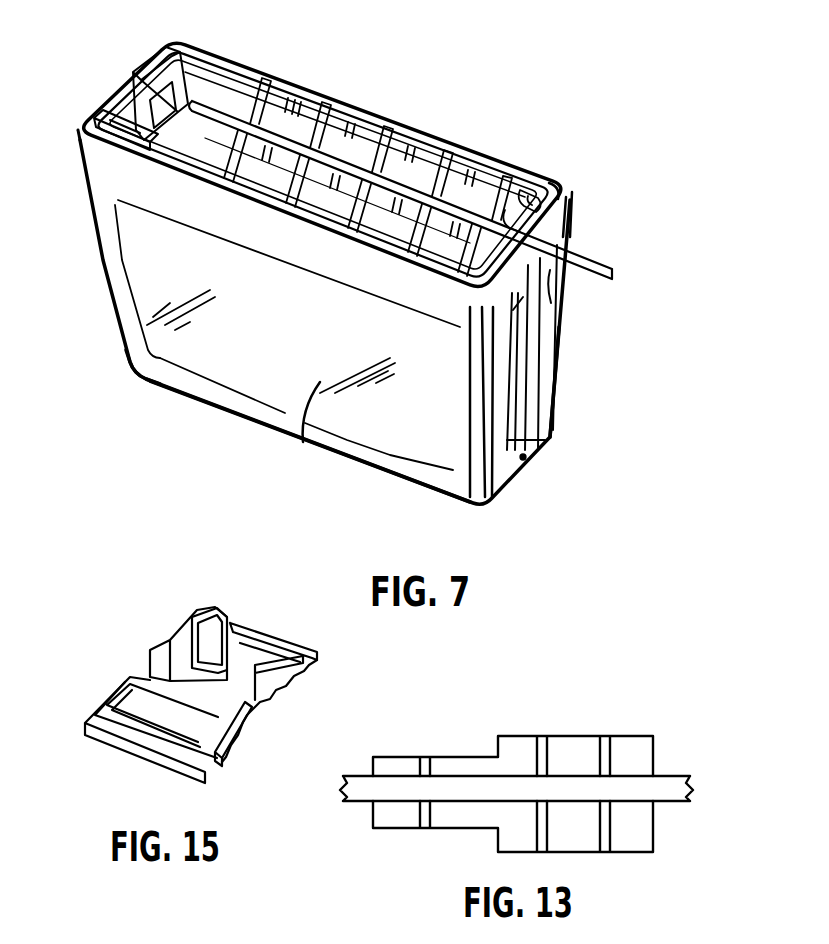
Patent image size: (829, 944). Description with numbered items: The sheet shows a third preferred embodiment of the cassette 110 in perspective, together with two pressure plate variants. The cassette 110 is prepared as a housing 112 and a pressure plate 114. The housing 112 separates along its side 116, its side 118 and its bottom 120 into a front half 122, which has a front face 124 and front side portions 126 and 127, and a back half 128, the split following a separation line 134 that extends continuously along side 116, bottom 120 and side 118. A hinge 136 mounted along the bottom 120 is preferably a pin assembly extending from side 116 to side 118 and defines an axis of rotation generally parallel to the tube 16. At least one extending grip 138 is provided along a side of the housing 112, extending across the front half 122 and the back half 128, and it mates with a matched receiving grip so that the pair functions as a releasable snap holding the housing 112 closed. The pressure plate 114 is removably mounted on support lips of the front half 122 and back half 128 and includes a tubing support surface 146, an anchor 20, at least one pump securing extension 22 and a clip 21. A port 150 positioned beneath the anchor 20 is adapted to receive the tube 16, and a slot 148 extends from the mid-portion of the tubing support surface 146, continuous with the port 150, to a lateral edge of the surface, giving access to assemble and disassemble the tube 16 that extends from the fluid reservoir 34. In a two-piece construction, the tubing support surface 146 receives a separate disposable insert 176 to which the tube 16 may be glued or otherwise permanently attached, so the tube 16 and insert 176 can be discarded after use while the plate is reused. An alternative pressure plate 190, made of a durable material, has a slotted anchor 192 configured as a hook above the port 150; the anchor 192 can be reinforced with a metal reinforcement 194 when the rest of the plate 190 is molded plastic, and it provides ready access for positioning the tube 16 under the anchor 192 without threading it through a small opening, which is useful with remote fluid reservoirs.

In FIG. 7, the cassette 110 is at (592, 376).
In FIG. 7, the housing 112 is at (107, 230).
In FIG. 7, the pressure plate 114 is at (440, 147).
In FIG. 7, the side 116 is at (78, 140).
In FIG. 7, the side 118 is at (502, 387).
In FIG. 7, the bottom 120 is at (262, 423).
In FIG. 7, the front half 122 is at (145, 380).
In FIG. 7, the front face 124 is at (303, 443).
In FIG. 7, the front side portion 126 is at (100, 182).
In FIG. 7, the front side portion 127 is at (502, 432).
In FIG. 7, the back half 128 is at (578, 224).
In FIG. 7, the separation line 134 is at (528, 338).
In FIG. 7, the hinge 136 is at (525, 458).
In FIG. 7, the extending grip 138 is at (548, 306).
In FIG. 7, the tubing support surface 146 is at (358, 140).
In FIG. 7, the slot 148 is at (122, 100).
In FIG. 7, the port 150 is at (132, 70).
In FIG. 15, the port 150 is at (153, 653).
In FIG. 7, the tube 16 is at (268, 97).
In FIG. 13, the tube 16 is at (672, 803).
In FIG. 7, the anchor 20 is at (188, 42).
In FIG. 7, the clip 21 is at (564, 183).
In FIG. 7, the pump securing extension 22 is at (530, 183).
In FIG. 7, the fluid reservoir 34 is at (140, 270).
In FIG. 13, the insert 176 is at (655, 750).
In FIG. 15, the pressure plate 190 is at (97, 703).
In FIG. 15, the slotted anchor 192 is at (208, 617).
In FIG. 15, the metal reinforcement 194 is at (230, 640).